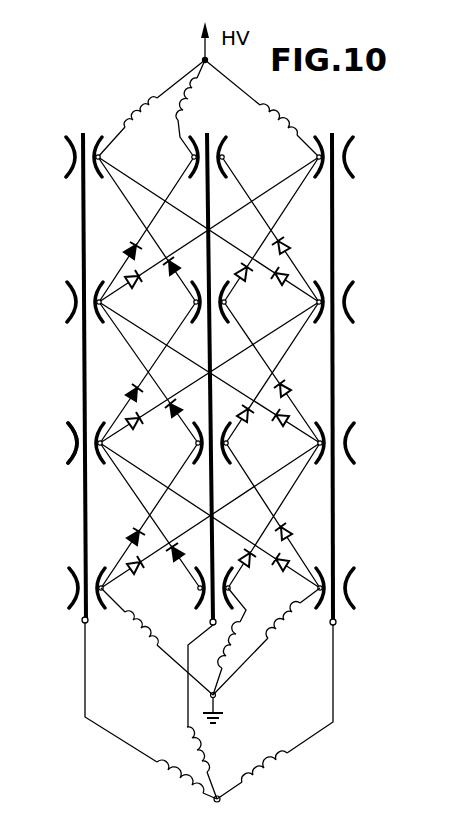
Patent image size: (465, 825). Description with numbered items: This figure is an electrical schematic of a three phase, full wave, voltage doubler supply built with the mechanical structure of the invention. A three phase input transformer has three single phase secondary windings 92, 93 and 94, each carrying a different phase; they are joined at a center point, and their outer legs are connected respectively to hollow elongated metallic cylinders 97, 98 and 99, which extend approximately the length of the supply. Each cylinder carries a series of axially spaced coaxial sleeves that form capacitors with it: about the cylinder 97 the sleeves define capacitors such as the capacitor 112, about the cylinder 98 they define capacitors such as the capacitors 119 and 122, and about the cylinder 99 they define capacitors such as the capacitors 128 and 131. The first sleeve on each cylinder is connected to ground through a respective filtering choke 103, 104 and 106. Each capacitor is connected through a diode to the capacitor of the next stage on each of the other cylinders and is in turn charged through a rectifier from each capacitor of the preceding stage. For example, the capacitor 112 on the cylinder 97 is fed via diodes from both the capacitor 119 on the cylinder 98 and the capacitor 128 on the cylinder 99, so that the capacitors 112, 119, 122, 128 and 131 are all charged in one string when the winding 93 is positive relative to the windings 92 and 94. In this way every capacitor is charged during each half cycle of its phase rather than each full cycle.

The hollow elongated metallic cylinder 97 is at (82, 487).
The hollow elongated metallic cylinder 98 is at (209, 496).
The hollow elongated metallic cylinder 99 is at (335, 525).
The capacitor 112 is at (78, 420).
The capacitor 131 is at (345, 283).
The capacitor 128 is at (345, 568).
The capacitor 122 is at (196, 321).
The capacitor 119 is at (197, 610).
The filtering choke 103 is at (139, 645).
The filtering choke 104 is at (236, 657).
The filtering choke 106 is at (283, 636).
The single phase secondary winding 92 is at (160, 767).
The single phase secondary winding 93 is at (185, 737).
The single phase secondary winding 94 is at (280, 762).